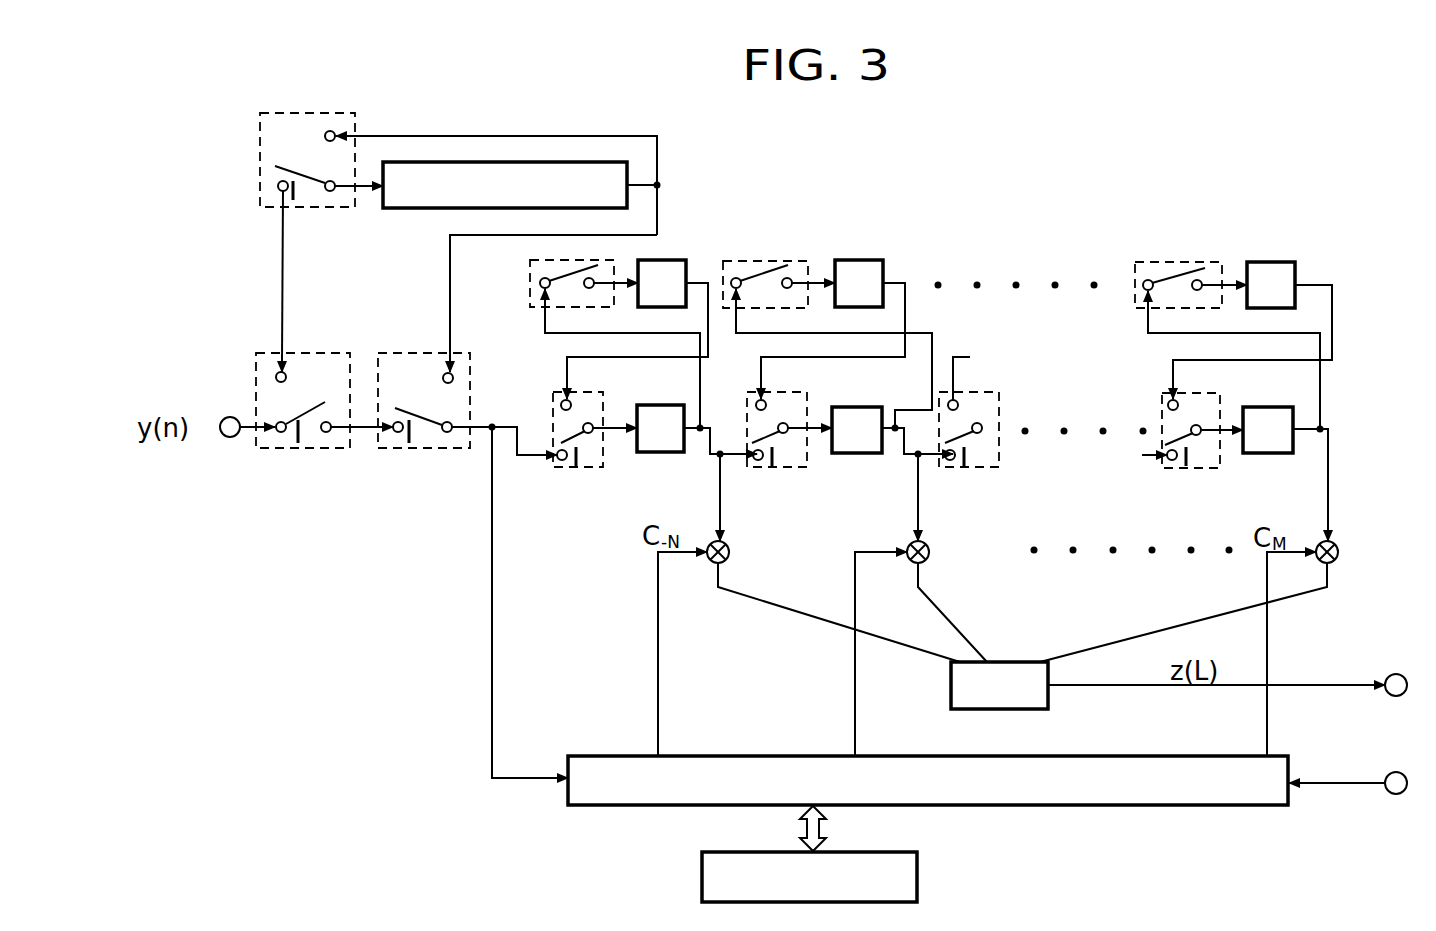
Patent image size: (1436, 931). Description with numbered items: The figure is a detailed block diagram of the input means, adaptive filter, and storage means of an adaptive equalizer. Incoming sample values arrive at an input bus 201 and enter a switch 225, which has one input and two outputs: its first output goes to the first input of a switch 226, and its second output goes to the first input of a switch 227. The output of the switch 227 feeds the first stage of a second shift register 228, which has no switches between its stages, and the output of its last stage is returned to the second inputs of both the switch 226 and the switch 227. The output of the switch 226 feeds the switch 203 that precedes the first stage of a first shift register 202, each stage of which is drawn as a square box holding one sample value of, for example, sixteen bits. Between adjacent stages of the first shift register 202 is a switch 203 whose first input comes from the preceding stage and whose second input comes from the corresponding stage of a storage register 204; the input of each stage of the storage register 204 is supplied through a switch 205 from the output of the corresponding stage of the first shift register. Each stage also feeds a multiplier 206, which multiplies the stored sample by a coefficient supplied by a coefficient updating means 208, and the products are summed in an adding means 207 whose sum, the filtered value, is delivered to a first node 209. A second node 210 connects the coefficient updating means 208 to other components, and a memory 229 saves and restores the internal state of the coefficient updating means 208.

The input bus 201 is at (222, 437).
The first shift register 202 is at (665, 452).
The switch 203 is at (578, 470).
The storage register 204 is at (660, 262).
The switch 205 is at (530, 286).
The multiplier 206 is at (731, 556).
The adding means 207 is at (1030, 710).
The coefficient updating means 208 is at (1262, 808).
The first node 209 is at (1388, 677).
The second node 210 is at (1388, 775).
The switch 225 is at (340, 452).
The switch 226 is at (460, 452).
The switch 227 is at (352, 119).
The second shift register 228 is at (470, 162).
The memory 229 is at (920, 887).